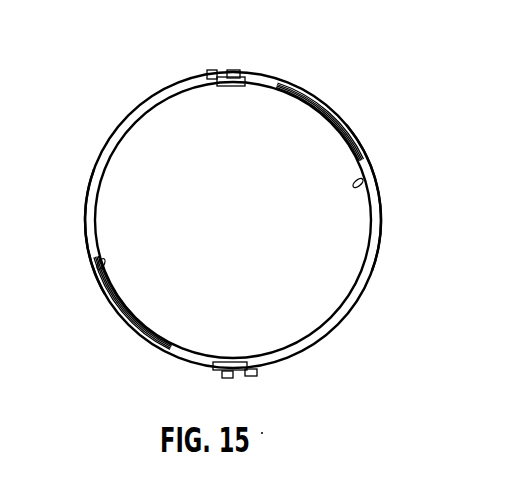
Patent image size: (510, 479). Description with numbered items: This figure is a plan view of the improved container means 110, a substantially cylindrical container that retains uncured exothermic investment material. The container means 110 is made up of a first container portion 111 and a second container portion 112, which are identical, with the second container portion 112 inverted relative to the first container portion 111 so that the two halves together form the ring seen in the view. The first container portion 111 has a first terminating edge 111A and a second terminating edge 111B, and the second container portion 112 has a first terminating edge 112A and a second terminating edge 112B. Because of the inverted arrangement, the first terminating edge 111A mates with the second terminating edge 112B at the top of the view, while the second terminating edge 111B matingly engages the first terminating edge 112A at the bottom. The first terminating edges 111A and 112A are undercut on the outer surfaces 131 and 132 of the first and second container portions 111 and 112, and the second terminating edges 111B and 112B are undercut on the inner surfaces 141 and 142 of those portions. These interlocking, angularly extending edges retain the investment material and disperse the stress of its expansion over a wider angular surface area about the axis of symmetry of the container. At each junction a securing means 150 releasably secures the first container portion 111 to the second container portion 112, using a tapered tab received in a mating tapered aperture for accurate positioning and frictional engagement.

The container means 110 is at (232, 215).
The first container portion 111 is at (84, 199).
The second container portion 112 is at (381, 225).
The outer surface of the first container portion 131 is at (106, 149).
The outer surface of the second container portion 132 is at (375, 267).
The inner surface of the first container portion 141 is at (97, 267).
The inner surface of the second container portion 142 is at (364, 180).
The securing means 150 is at (229, 215).
The first terminating edge of the first container portion 111A is at (247, 89).
The second terminating edge of the first container portion 111B is at (217, 371).
The first terminating edge of the second container portion 112A is at (222, 360).
The second terminating edge of the second container portion 112B is at (246, 78).